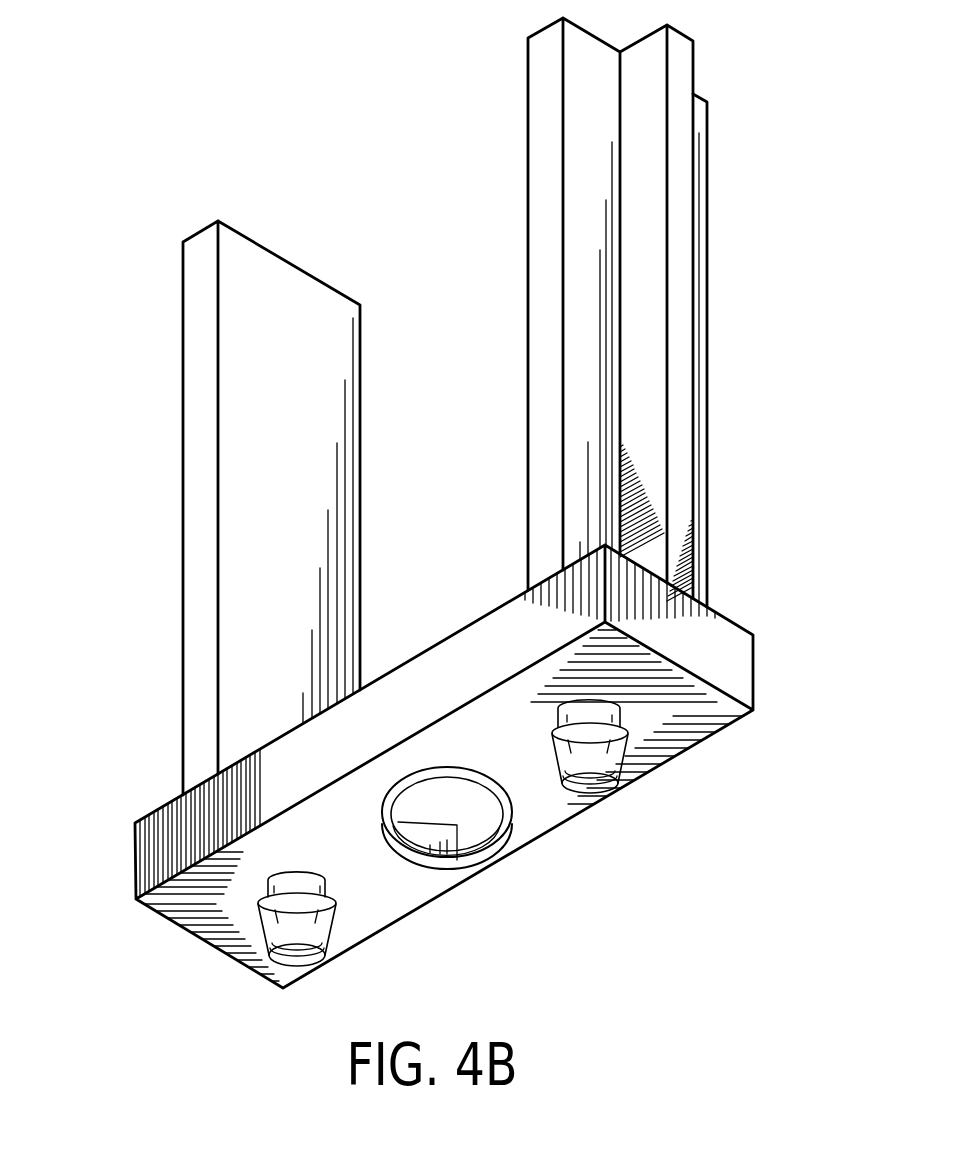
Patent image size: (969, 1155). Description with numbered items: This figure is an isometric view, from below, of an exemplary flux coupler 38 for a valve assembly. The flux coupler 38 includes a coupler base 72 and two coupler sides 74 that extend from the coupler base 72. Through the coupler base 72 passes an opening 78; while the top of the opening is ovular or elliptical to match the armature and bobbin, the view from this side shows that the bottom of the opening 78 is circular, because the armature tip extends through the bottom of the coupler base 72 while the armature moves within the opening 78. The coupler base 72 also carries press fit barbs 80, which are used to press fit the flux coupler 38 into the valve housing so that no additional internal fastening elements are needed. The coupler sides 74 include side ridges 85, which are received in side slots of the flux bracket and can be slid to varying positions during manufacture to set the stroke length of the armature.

The flux coupler 38 is at (118, 198).
The coupler base 72 is at (745, 657).
The coupler sides 74 is at (707, 200).
The side ridges 85 is at (680, 68).
The opening 78 is at (475, 832).
The press fit barbs 80 is at (603, 770).